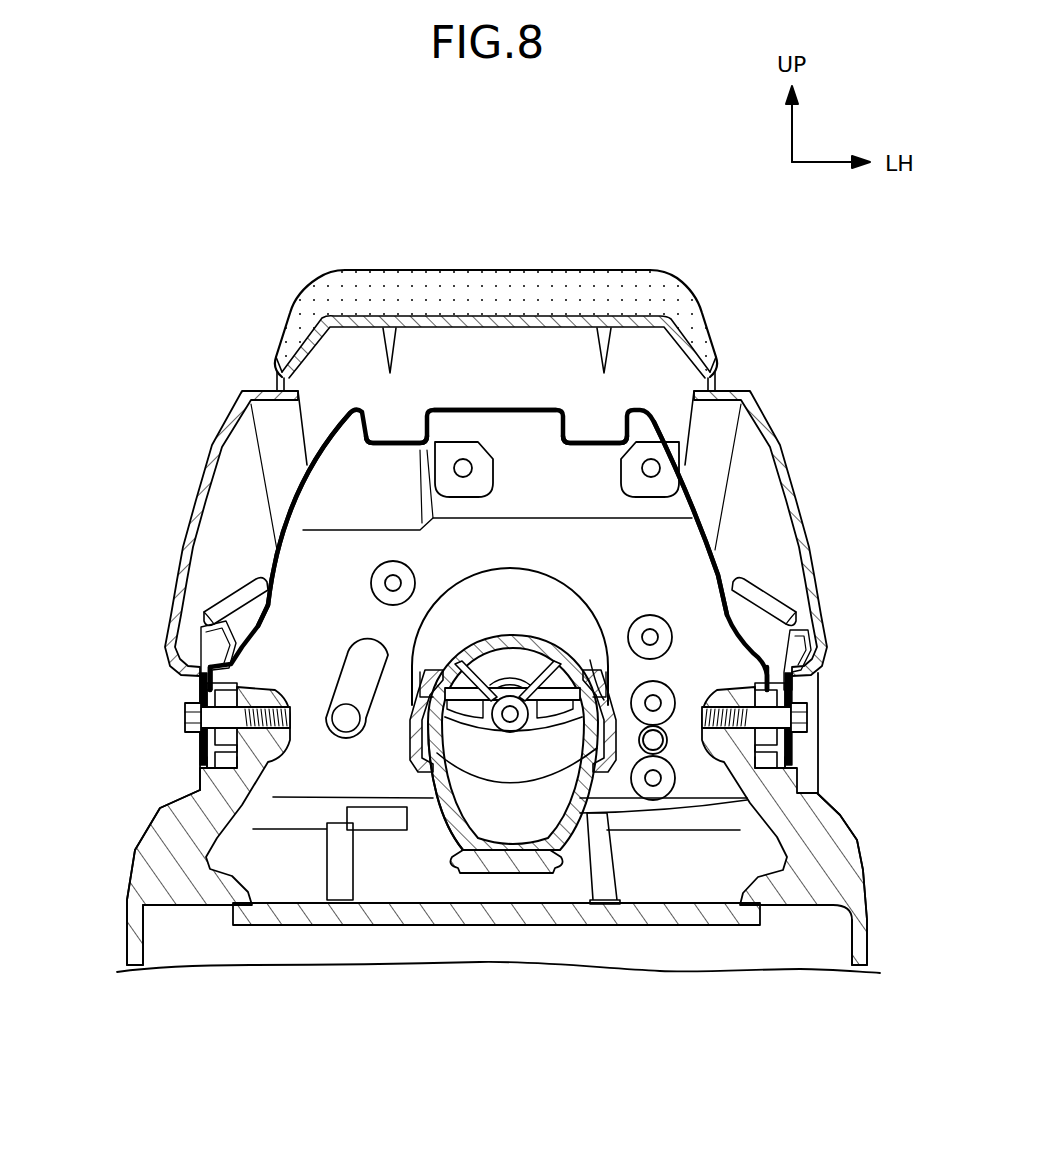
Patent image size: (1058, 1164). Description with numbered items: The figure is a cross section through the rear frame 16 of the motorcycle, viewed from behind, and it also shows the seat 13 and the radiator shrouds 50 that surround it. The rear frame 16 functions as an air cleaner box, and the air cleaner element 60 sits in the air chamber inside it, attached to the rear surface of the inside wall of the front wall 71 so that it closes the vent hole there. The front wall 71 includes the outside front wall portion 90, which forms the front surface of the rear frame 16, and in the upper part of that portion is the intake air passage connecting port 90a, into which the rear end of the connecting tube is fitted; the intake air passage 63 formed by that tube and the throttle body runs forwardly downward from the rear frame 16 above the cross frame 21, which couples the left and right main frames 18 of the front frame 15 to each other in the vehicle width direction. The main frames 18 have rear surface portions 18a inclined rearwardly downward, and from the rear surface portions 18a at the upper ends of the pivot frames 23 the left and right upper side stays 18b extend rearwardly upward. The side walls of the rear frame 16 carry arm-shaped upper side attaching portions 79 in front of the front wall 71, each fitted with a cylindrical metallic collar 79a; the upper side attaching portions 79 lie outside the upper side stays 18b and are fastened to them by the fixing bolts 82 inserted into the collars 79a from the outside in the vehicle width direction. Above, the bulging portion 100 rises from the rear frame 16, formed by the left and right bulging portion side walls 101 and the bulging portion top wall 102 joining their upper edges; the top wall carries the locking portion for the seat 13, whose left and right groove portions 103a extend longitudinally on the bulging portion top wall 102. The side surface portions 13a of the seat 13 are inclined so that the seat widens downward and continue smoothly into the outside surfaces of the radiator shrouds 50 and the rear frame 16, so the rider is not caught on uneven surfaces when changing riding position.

The seat 13 is at (461, 272).
The side surface portions 13a is at (287, 336).
The front frame 15 is at (127, 947).
The rear frame 16 is at (257, 622).
The main frames 18 is at (126, 887).
The rear surface portions 18a is at (190, 782).
The upper side stays 18b is at (255, 663).
The cross frame 21 is at (510, 927).
The pivot frames 23 is at (160, 837).
The radiator shrouds 50 is at (219, 447).
The air cleaner element 60 is at (547, 718).
The intake air passage 63 is at (452, 845).
The front wall 71 is at (290, 607).
The upper side attaching portions 79 is at (203, 765).
The collars 79a is at (202, 697).
The fixing bolts 82 is at (185, 717).
The outside front wall portion 90 is at (280, 657).
The intake air passage connecting port 90a is at (593, 657).
The bulging portion 100 is at (464, 403).
The bulging portion side walls 101 is at (293, 505).
The bulging portion top wall 102 is at (521, 410).
The groove portions 103a is at (413, 440).